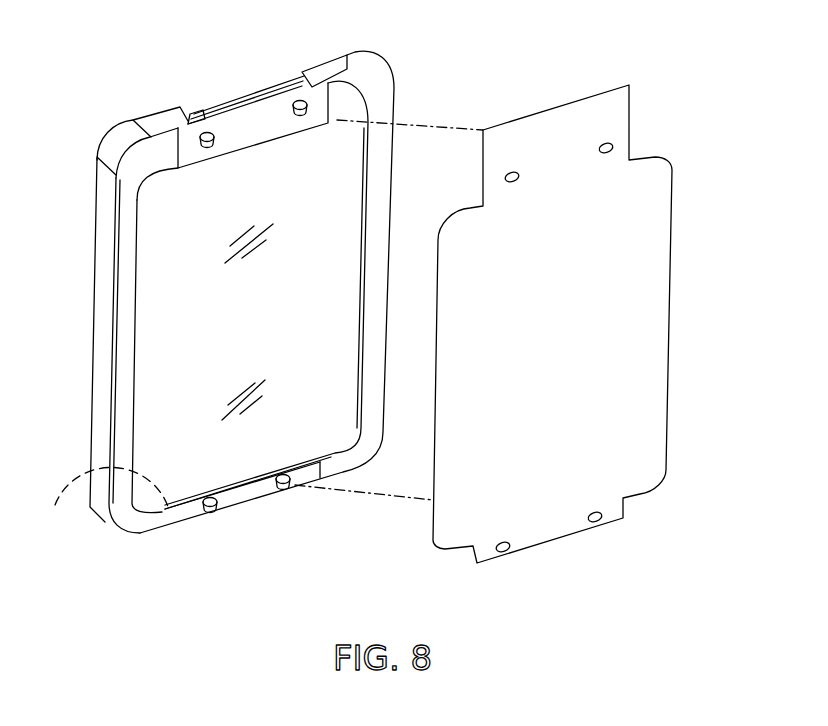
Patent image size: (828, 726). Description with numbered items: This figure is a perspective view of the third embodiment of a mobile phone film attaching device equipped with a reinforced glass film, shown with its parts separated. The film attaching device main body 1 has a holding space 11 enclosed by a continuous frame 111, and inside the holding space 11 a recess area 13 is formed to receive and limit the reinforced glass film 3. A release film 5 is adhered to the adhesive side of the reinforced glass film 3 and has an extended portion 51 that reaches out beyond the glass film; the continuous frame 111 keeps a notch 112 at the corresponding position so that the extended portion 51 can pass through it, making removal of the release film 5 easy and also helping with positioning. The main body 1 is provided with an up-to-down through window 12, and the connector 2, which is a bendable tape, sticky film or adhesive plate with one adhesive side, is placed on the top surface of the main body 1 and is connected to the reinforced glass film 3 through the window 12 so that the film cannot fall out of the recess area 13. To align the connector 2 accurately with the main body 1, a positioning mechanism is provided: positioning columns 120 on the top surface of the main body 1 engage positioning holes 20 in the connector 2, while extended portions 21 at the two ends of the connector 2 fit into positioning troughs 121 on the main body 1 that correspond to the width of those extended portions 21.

The film attaching device main body 1 is at (86, 330).
The connector 2 is at (648, 218).
The reinforced glass film 3 is at (163, 378).
The release film 5 is at (247, 94).
The holding space 11 is at (265, 110).
The window 12 is at (162, 512).
The recess area 13 is at (62, 489).
The positioning holes 20 is at (612, 146).
The extended portions 21 is at (553, 147).
The extended portion 51 is at (200, 116).
The continuous frame 111 is at (120, 130).
The notch 112 is at (300, 80).
The positioning columns 120 is at (208, 152).
The positioning troughs 121 is at (268, 130).